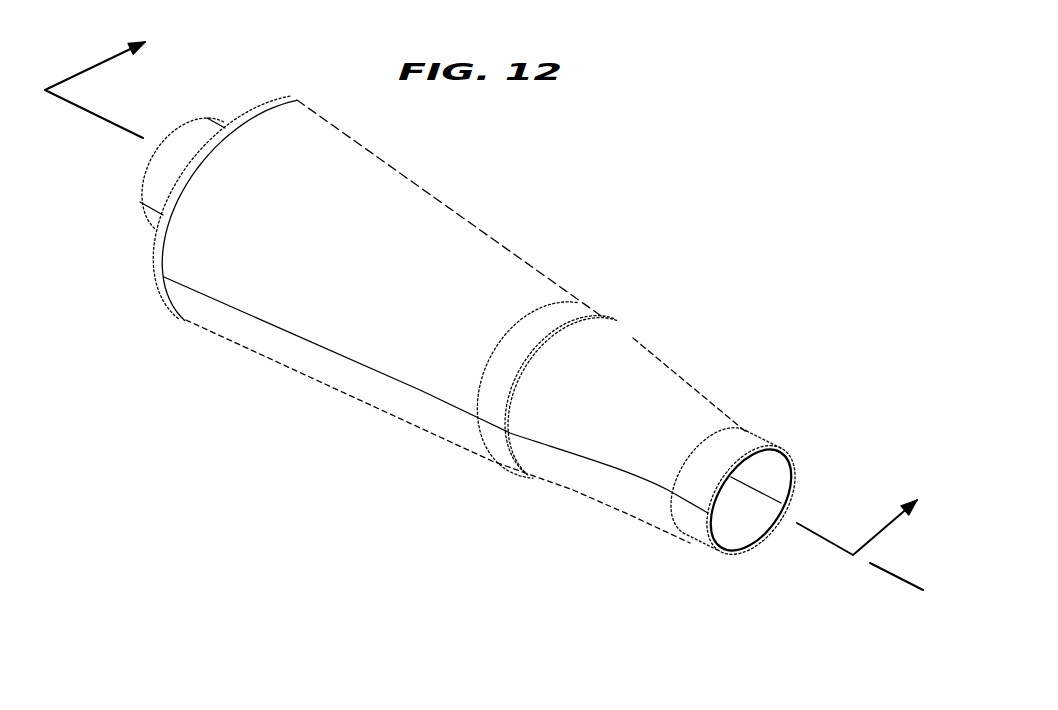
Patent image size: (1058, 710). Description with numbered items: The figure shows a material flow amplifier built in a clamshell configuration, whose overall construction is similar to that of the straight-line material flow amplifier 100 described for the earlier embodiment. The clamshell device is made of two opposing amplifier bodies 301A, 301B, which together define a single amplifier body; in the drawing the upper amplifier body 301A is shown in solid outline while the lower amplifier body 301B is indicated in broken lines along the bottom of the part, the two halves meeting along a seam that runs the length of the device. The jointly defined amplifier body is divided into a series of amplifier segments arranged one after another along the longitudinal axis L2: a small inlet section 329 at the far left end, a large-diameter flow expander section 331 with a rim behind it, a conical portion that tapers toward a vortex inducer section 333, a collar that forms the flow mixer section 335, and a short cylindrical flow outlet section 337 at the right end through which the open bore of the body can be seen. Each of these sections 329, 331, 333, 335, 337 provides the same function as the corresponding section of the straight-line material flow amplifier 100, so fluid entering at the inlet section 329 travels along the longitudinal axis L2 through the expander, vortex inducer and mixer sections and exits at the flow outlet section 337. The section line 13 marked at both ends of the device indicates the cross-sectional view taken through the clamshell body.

The section line 13- 13 is at (503, 288).
The straight-line material flow amplifier 100 is at (753, 300).
The inlet section 329 is at (202, 127).
The flow expander section 331 is at (246, 110).
The vortex inducer section 333 is at (457, 228).
The flow mixer section 335 is at (590, 352).
The flow outlet section 337 is at (733, 442).
The amplifier body 301A is at (510, 267).
The amplifier body 301B is at (363, 402).
The longitudinal axis L2 is at (897, 578).